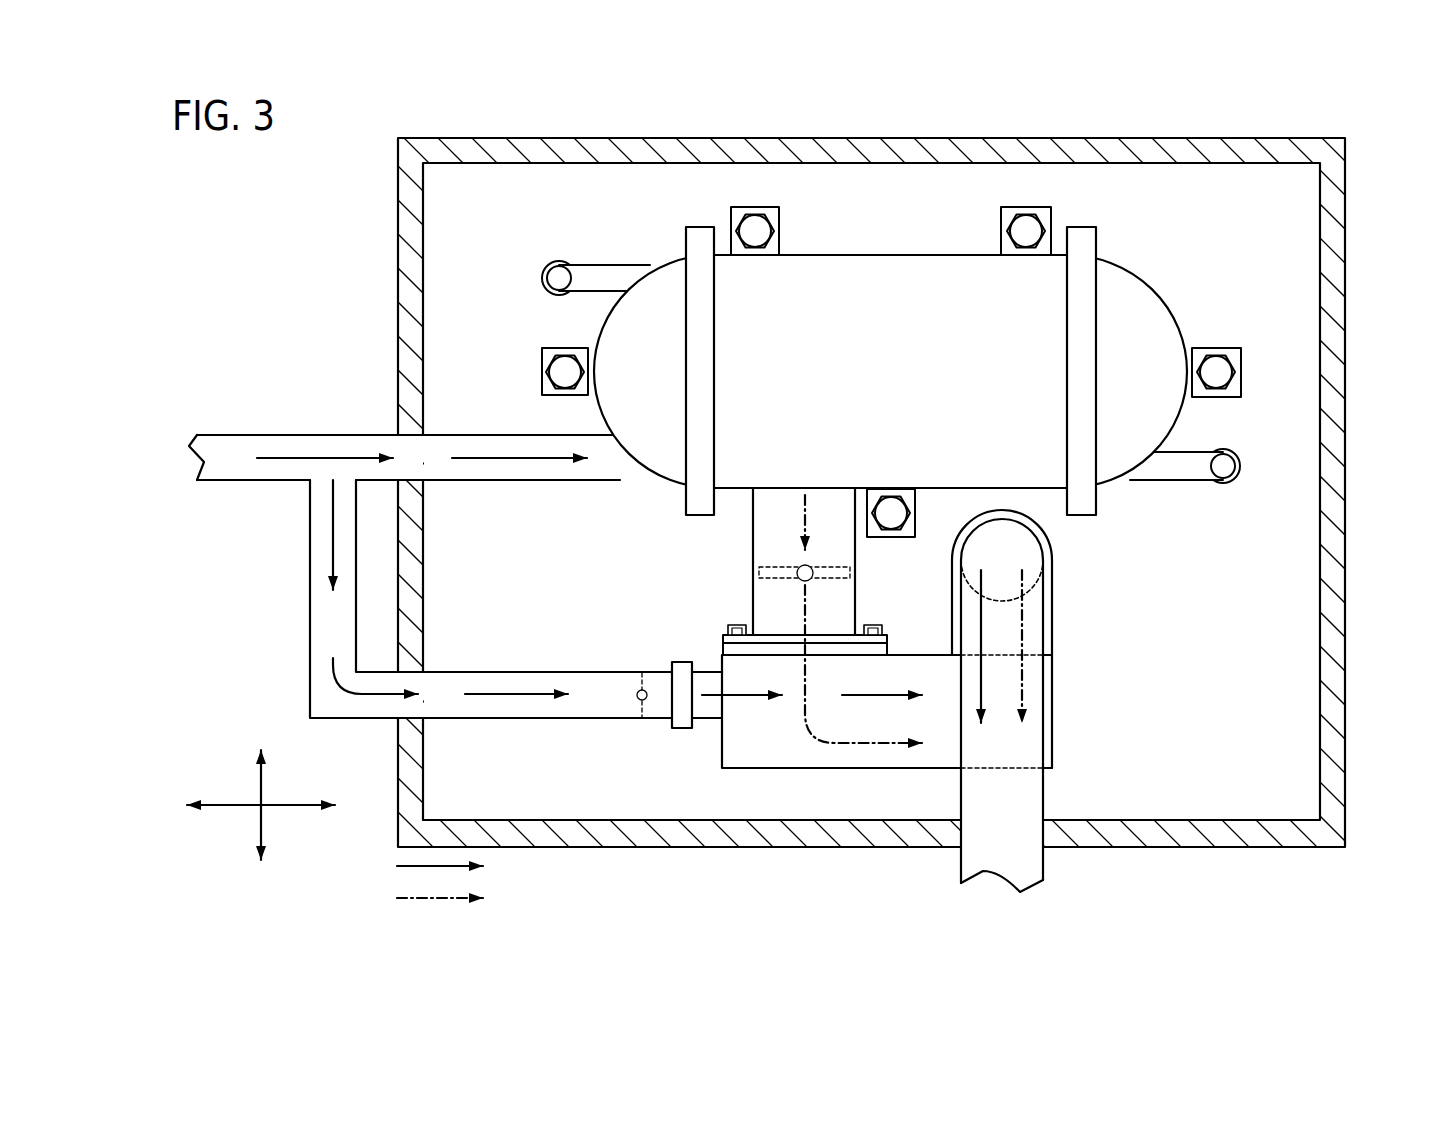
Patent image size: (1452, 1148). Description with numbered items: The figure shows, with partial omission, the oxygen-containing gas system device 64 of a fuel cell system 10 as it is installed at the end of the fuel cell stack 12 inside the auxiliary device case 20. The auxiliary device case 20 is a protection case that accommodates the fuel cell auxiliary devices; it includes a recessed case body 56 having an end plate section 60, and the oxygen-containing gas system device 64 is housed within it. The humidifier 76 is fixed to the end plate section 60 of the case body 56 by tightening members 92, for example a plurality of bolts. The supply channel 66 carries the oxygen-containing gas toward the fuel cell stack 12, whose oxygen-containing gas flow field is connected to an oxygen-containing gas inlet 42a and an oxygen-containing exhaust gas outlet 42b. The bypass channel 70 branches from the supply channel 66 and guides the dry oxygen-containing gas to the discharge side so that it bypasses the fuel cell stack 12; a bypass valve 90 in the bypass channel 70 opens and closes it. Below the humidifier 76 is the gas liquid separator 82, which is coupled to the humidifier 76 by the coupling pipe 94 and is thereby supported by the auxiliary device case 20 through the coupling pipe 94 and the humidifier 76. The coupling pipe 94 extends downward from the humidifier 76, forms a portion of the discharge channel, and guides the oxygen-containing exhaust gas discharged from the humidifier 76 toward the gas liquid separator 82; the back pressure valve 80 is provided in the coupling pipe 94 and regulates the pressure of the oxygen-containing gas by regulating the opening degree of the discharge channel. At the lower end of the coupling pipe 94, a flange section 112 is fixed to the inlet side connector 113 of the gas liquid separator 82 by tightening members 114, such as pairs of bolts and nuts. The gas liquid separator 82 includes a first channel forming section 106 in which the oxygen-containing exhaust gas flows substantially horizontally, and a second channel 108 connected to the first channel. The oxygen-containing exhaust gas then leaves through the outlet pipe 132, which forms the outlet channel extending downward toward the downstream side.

The fuel cell system 10 is at (258, 177).
The fuel cell stack 12 is at (726, 494).
The auxiliary device case 20 is at (726, 500).
The case body 56 is at (1335, 226).
The end plate section 60 is at (1287, 272).
The oxygen-containing gas system device 64 is at (638, 182).
The supply channel 66 is at (243, 443).
The bypass channel 70 is at (310, 565).
The humidifier 76 is at (895, 267).
The back pressure valve 80 is at (775, 570).
The gas liquid separator 82 is at (846, 733).
The bypass valve 90 is at (641, 702).
The tightening members 92 is at (1220, 367).
The coupling pipe 94 is at (753, 542).
The oxygen-containing gas inlet 42a is at (1237, 480).
The oxygen-containing exhaust gas outlet 42b is at (543, 267).
The first channel forming section 106 is at (793, 755).
The second channel 108 is at (1052, 607).
The flange section 112 is at (723, 634).
The inlet side connector 113 is at (722, 650).
The tightening members 114 is at (872, 622).
The outlet pipe 132 is at (1033, 860).